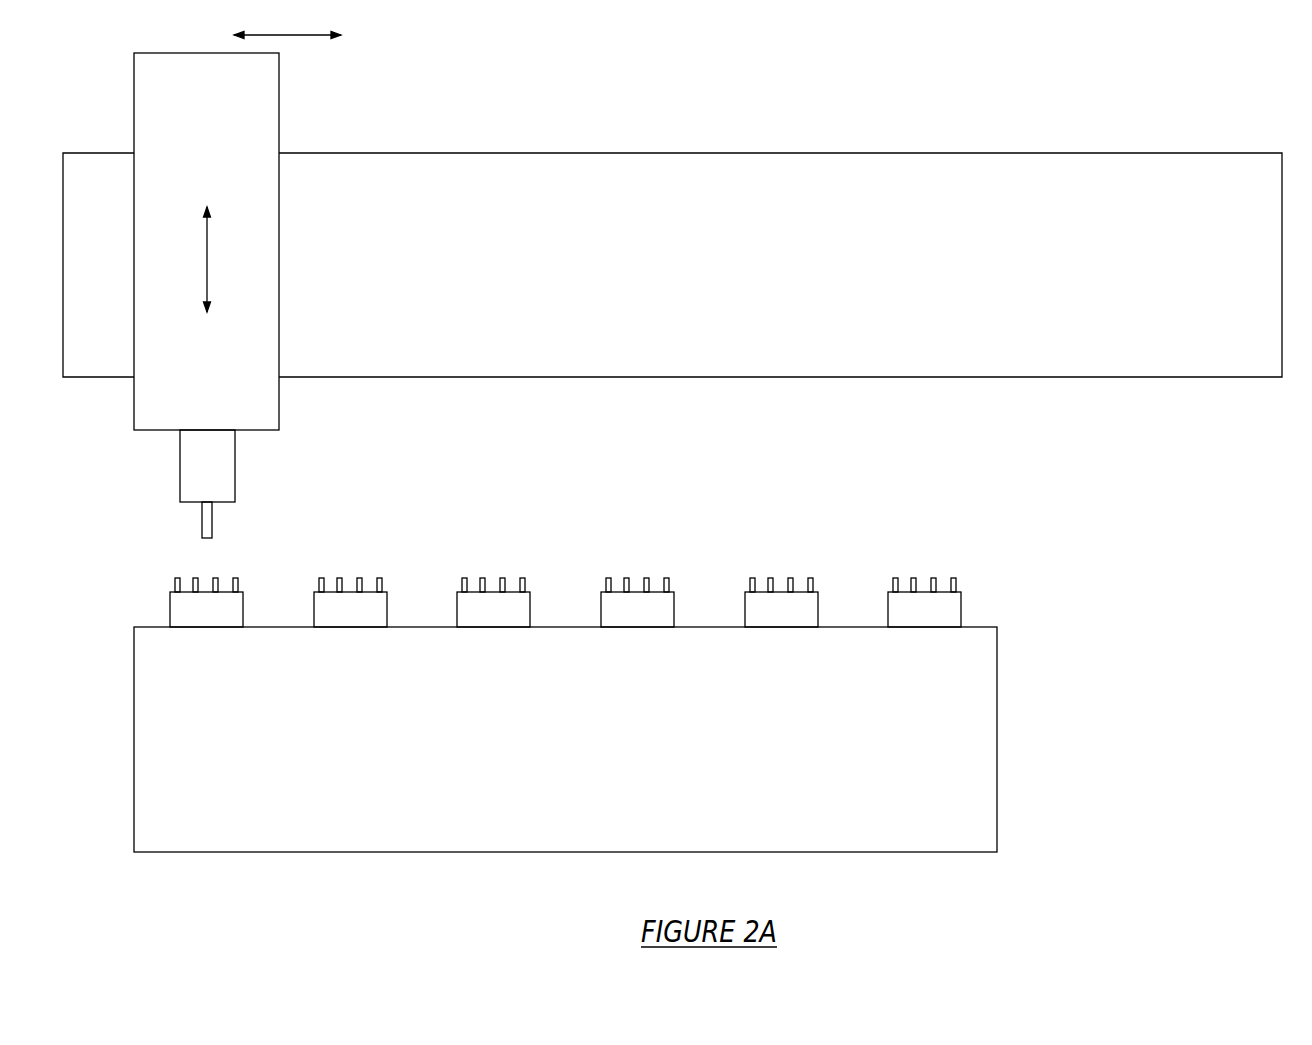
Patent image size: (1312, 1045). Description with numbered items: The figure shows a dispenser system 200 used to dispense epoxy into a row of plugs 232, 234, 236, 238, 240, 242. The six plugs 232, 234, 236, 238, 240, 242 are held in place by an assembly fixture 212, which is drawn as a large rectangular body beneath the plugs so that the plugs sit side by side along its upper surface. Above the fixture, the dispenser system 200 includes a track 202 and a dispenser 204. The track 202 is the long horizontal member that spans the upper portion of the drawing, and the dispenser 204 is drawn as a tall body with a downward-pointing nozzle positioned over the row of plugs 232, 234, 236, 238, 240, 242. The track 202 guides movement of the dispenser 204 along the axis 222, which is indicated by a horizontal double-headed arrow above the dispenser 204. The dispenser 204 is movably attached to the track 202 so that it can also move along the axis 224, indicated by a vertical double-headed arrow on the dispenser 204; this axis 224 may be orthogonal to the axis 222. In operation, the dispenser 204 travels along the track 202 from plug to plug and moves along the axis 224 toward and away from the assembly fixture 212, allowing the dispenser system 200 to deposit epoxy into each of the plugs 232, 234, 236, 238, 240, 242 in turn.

The dispenser system 200 is at (1238, 808).
The track 202 is at (717, 273).
The dispenser 204 is at (293, 285).
The assembly fixture 212 is at (662, 748).
The axis 222 is at (315, 55).
The axis 224 is at (231, 296).
The plug 232 is at (245, 554).
The plug 234 is at (397, 554).
The plug 236 is at (531, 554).
The plug 238 is at (673, 554).
The plug 240 is at (827, 554).
The plug 242 is at (961, 554).